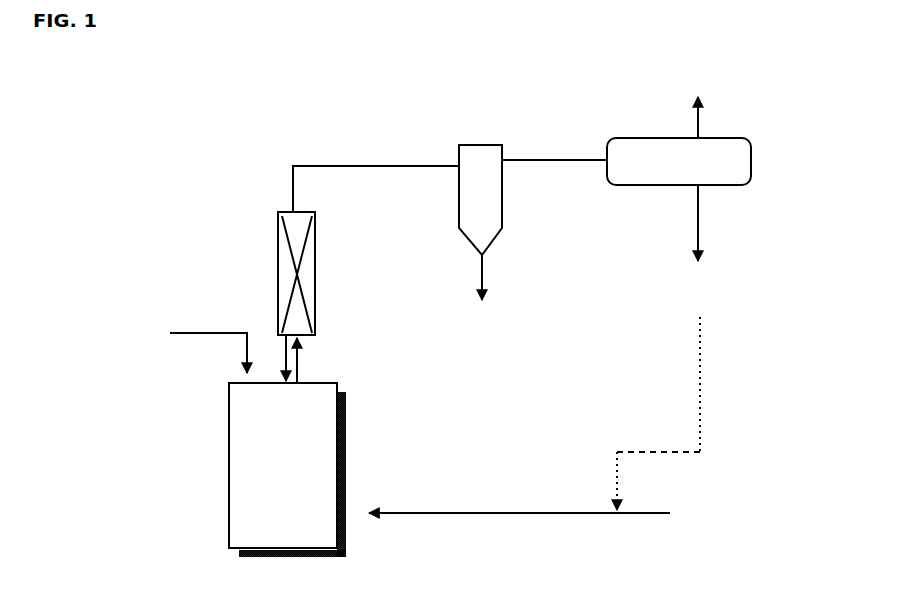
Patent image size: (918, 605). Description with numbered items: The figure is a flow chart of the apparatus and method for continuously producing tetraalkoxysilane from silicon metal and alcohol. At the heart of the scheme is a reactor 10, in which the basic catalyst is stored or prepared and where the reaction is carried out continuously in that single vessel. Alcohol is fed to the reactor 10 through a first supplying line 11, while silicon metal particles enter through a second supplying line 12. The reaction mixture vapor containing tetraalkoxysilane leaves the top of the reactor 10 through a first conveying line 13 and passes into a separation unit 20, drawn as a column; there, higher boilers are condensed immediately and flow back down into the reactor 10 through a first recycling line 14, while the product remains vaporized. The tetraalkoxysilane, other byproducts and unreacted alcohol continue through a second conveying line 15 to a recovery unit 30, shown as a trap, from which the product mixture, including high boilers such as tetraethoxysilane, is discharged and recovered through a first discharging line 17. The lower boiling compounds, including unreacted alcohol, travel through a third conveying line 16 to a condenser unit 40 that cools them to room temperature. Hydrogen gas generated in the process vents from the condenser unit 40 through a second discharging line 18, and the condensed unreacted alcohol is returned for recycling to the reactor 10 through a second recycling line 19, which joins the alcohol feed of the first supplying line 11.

The reactor 10 is at (287, 475).
The first supplying line 11 is at (562, 524).
The second supplying line 12 is at (142, 342).
The first conveying line 13 is at (314, 360).
The first recycling line 14 is at (270, 358).
The second conveying line 15 is at (376, 181).
The third conveying line 16 is at (554, 150).
The first discharging line 17 is at (512, 323).
The second discharging line 18 is at (716, 98).
The second recycling line 19 is at (726, 413).
The separation unit 20 is at (346, 273).
The recovery unit 30 is at (513, 200).
The condenser unit 40 is at (679, 225).